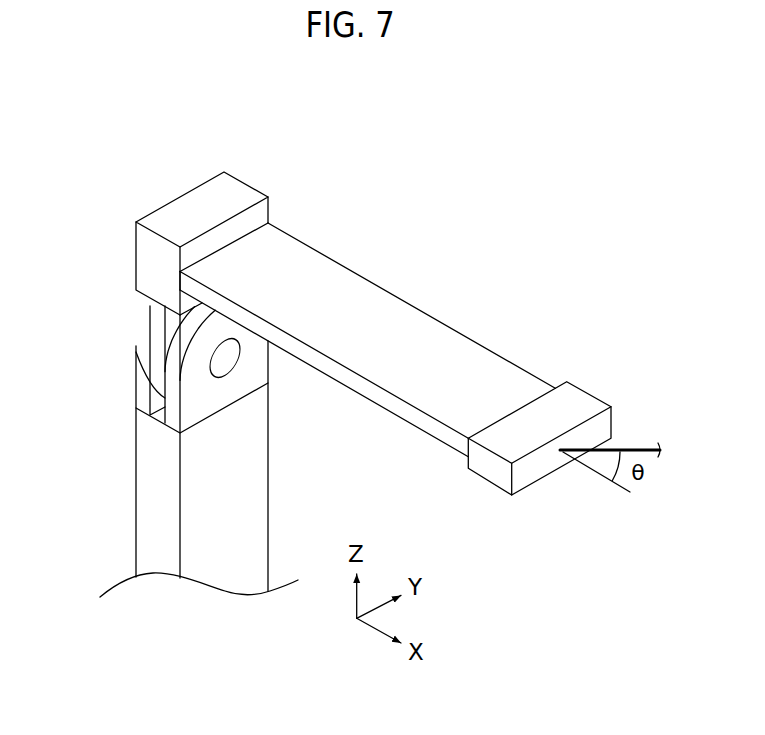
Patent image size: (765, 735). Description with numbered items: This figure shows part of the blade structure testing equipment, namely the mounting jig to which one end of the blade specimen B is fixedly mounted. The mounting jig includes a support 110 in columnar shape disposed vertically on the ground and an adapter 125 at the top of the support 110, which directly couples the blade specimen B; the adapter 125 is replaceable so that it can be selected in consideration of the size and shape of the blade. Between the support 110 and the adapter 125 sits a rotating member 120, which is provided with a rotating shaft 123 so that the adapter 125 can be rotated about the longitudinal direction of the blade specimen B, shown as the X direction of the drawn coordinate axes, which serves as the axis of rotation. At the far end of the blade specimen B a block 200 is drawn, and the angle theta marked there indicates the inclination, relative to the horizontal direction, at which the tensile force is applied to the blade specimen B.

The support 110 is at (157, 512).
The rotating member 120 is at (195, 362).
The rotating shaft 123 is at (224, 358).
The adapter 125 is at (193, 207).
The blade specimen B is at (376, 305).
The end block 200 is at (578, 401).